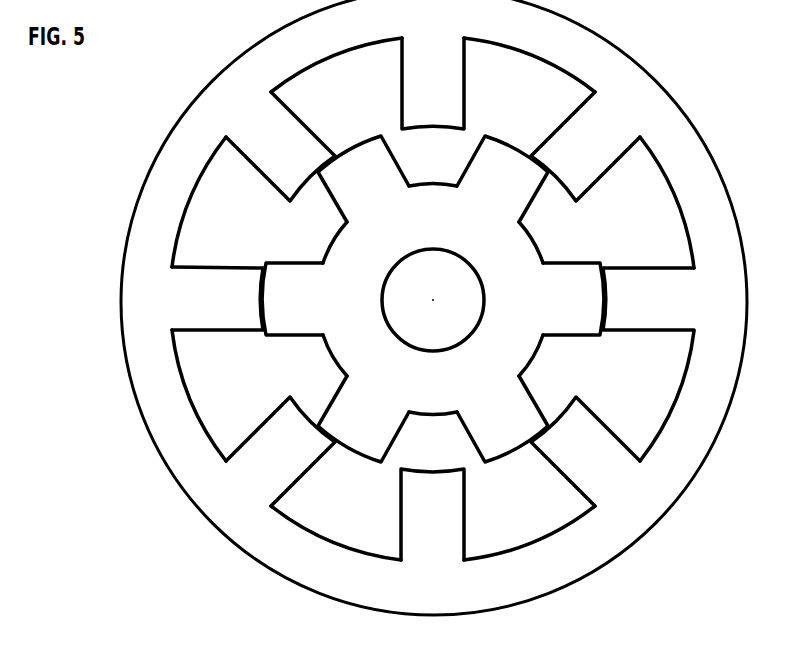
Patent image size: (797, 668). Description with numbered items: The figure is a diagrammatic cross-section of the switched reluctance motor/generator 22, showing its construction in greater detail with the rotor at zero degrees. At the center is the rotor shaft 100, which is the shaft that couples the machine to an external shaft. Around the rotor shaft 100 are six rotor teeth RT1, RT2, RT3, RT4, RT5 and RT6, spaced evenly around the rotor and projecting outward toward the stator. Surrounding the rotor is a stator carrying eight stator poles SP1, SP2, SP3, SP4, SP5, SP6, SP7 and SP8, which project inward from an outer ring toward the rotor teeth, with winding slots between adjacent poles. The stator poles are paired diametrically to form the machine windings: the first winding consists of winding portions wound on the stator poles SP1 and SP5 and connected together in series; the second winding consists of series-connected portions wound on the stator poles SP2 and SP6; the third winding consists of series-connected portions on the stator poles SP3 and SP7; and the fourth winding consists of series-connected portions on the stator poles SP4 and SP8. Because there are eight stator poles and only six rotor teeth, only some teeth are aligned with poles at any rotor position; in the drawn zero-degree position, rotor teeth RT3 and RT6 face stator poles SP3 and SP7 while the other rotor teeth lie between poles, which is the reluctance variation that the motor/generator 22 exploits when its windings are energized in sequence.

The switched reluctance motor/generator 22 is at (206, 540).
The rotor shaft 100 is at (438, 263).
The stator pole SP1 is at (408, 64).
The stator pole SP2 is at (573, 123).
The stator pole SP3 is at (657, 283).
The stator pole SP4 is at (612, 447).
The stator pole SP5 is at (455, 518).
The stator pole SP6 is at (291, 473).
The stator pole SP7 is at (200, 318).
The stator pole SP8 is at (263, 167).
The rotor tooth RT1 is at (382, 192).
The rotor tooth RT2 is at (524, 192).
The rotor tooth RT3 is at (592, 313).
The rotor tooth RT4 is at (524, 432).
The rotor tooth RT5 is at (386, 429).
The rotor tooth RT6 is at (320, 310).